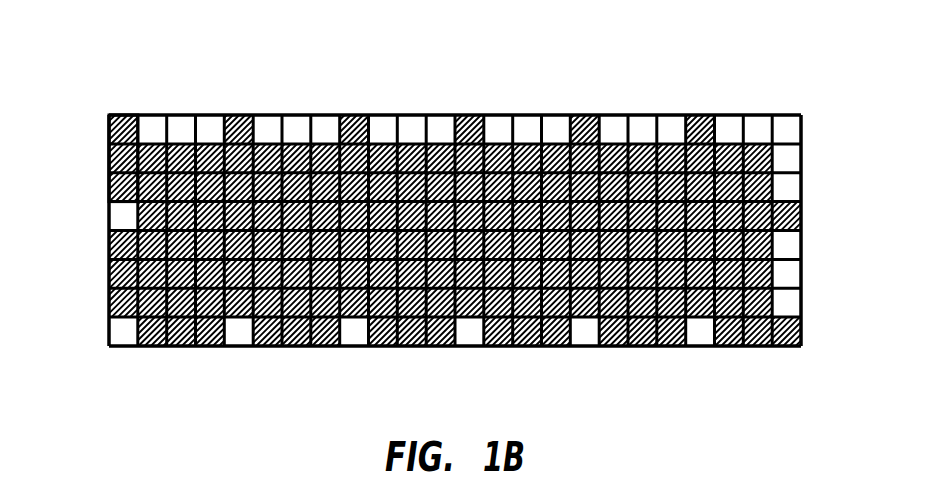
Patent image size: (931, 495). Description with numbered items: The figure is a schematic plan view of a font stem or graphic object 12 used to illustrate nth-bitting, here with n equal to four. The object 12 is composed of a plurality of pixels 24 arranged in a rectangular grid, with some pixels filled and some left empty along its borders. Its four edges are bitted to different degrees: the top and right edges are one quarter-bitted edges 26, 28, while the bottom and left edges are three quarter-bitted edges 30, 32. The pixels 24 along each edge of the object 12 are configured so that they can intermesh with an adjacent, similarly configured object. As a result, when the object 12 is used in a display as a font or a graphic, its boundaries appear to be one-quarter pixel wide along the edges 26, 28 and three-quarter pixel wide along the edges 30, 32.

The object 12 is at (177, 46).
The pixels 24 is at (101, 178).
The one quarter-bitted edge 26 is at (444, 84).
The one quarter-bitted edge 28 is at (826, 220).
The three quarter-bitted edge 30 is at (446, 371).
The three quarter-bitted edge 32 is at (65, 224).